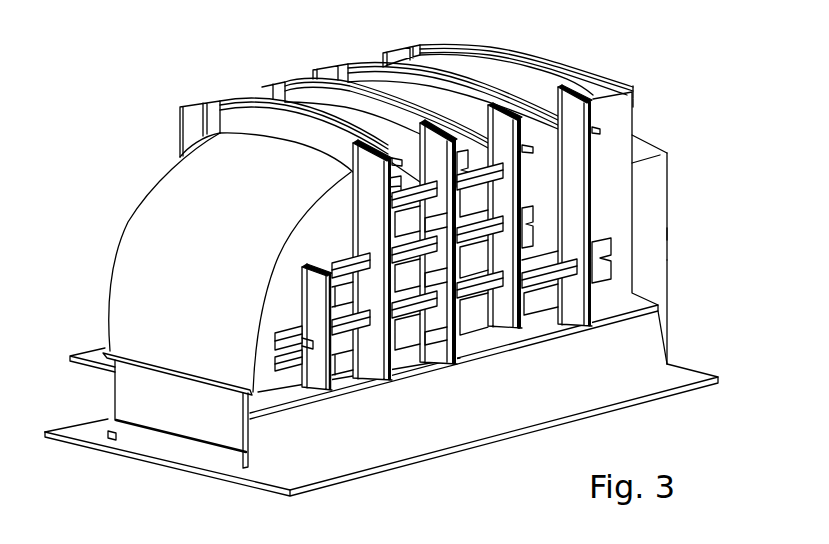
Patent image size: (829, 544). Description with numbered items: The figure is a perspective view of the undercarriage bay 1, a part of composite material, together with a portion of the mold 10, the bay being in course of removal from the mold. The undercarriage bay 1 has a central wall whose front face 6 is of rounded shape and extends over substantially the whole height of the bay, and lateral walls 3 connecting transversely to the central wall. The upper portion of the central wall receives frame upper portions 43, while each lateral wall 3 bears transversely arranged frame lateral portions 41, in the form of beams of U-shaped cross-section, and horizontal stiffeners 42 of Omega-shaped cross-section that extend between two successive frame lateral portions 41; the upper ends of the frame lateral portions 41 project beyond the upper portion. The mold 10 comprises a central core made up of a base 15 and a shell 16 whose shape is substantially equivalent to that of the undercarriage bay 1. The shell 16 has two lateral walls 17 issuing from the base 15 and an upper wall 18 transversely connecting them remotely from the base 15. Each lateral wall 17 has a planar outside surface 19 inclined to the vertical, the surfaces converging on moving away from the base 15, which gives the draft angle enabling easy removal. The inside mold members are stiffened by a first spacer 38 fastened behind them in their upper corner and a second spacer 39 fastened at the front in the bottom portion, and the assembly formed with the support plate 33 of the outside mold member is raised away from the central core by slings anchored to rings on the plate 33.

The undercarriage bay 1 is at (99, 218).
The lateral wall 3 is at (623, 133).
The front face 6 is at (168, 180).
The mold 10 is at (712, 348).
The base 15 is at (447, 437).
The shell 16 is at (653, 284).
The lateral wall 17 is at (654, 186).
The upper wall 18 is at (648, 148).
The planar outside surface 19 is at (649, 231).
The support plate 33 is at (302, 395).
The first spacer 38 is at (595, 77).
The second spacer 39 is at (165, 372).
The frame lateral portion 41 is at (508, 327).
The horizontal stiffener 42 is at (473, 310).
The frame upper portion 43 is at (235, 115).